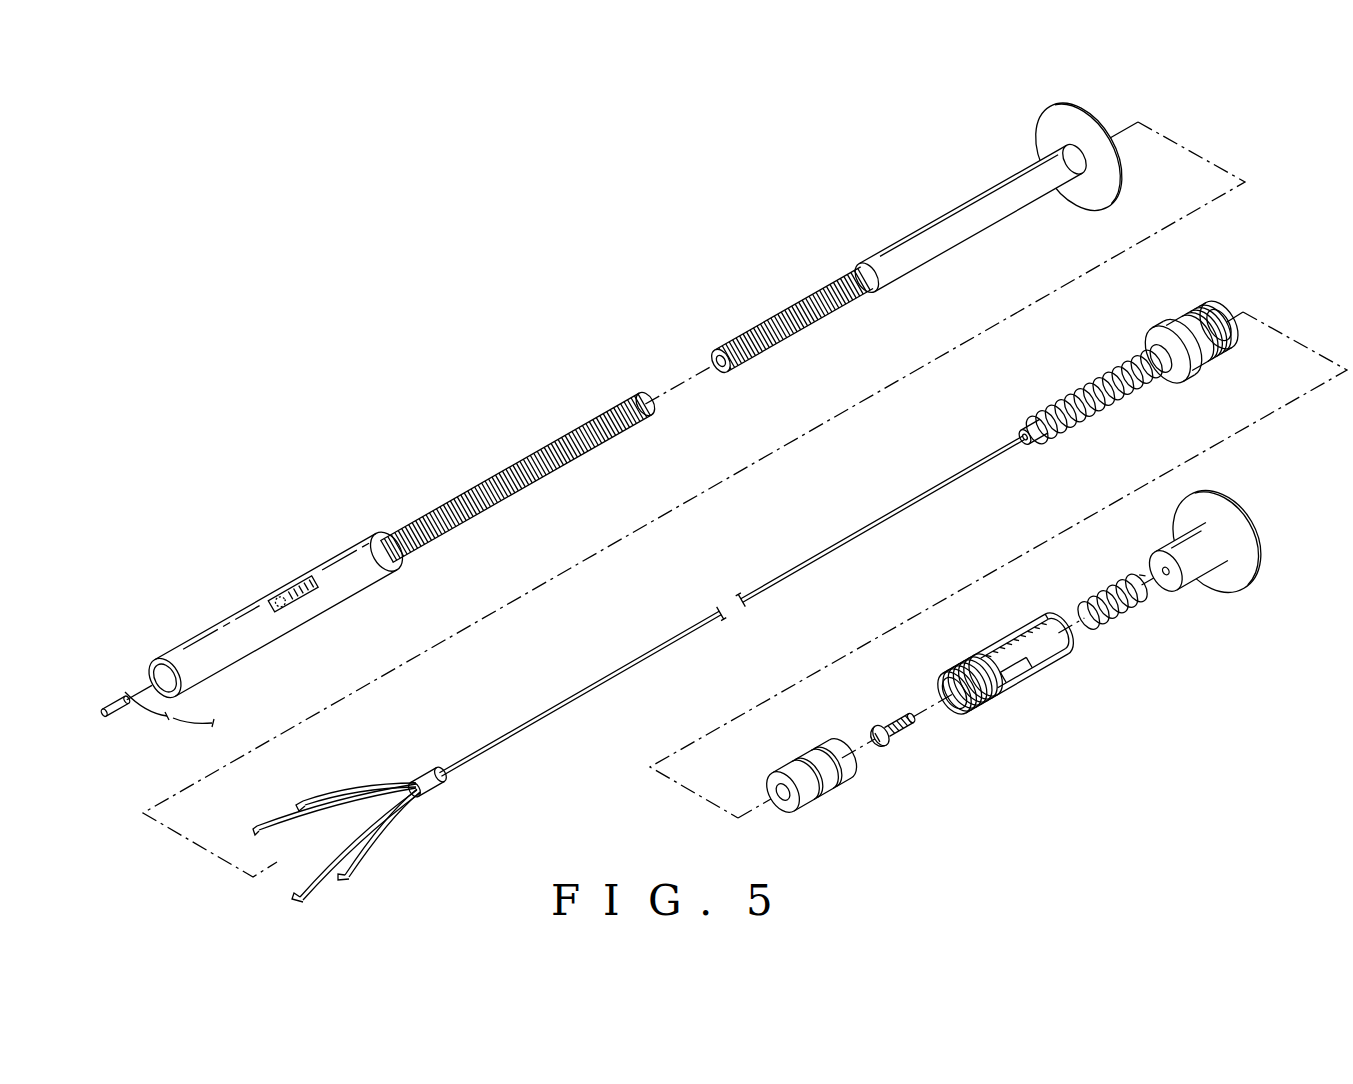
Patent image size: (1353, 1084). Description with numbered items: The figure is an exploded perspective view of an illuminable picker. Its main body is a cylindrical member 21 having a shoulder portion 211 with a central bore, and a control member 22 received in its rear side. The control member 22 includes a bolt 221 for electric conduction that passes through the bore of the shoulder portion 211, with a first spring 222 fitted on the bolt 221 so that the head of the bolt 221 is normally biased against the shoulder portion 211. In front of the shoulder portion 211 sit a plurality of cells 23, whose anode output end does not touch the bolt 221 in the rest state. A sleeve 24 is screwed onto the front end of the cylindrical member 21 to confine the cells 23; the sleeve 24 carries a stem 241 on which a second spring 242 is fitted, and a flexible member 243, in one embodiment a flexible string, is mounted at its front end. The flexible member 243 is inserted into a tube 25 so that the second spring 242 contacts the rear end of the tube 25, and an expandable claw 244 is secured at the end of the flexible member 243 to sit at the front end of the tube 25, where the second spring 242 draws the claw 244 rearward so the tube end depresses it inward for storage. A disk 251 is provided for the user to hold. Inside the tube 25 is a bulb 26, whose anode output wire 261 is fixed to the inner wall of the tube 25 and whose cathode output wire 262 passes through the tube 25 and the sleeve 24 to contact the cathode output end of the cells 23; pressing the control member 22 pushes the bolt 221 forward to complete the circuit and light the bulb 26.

The cylindrical member 21 is at (1005, 663).
The shoulder portion 211 is at (1024, 652).
The control member 22 is at (1203, 550).
The bolt 221 is at (893, 728).
The first spring 222 is at (1114, 600).
The cells 23 is at (811, 775).
The sleeve 24 is at (1192, 340).
The stem 241 is at (1032, 432).
The second spring 242 is at (1099, 394).
The flexible member 243 is at (732, 606).
The expandable claw 244 is at (388, 808).
The tube 25 is at (402, 542).
The disk 251 is at (912, 251).
The bulb 26 is at (115, 706).
The anode output wire 261 is at (139, 692).
The cathode output wire 262 is at (142, 712).